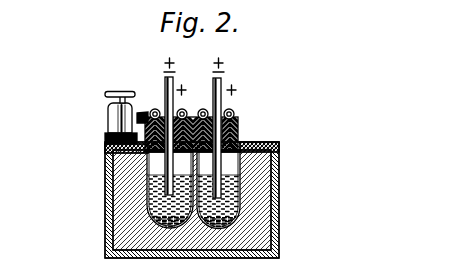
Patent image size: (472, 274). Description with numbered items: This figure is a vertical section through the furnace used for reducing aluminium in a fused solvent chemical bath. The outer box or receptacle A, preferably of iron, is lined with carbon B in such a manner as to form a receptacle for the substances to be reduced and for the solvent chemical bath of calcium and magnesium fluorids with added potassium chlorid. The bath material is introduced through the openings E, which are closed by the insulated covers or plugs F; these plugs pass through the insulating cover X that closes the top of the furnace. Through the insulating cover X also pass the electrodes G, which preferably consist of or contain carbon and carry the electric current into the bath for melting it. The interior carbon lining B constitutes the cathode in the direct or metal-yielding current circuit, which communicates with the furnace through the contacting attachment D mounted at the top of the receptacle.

The box or receptacle A is at (274, 188).
The carbon lining B is at (125, 199).
The contacting attachment D is at (118, 116).
The openings E is at (193, 193).
The insulated covers or plugs F is at (235, 118).
The electrodes G is at (165, 103).
The insulating cover X is at (146, 128).